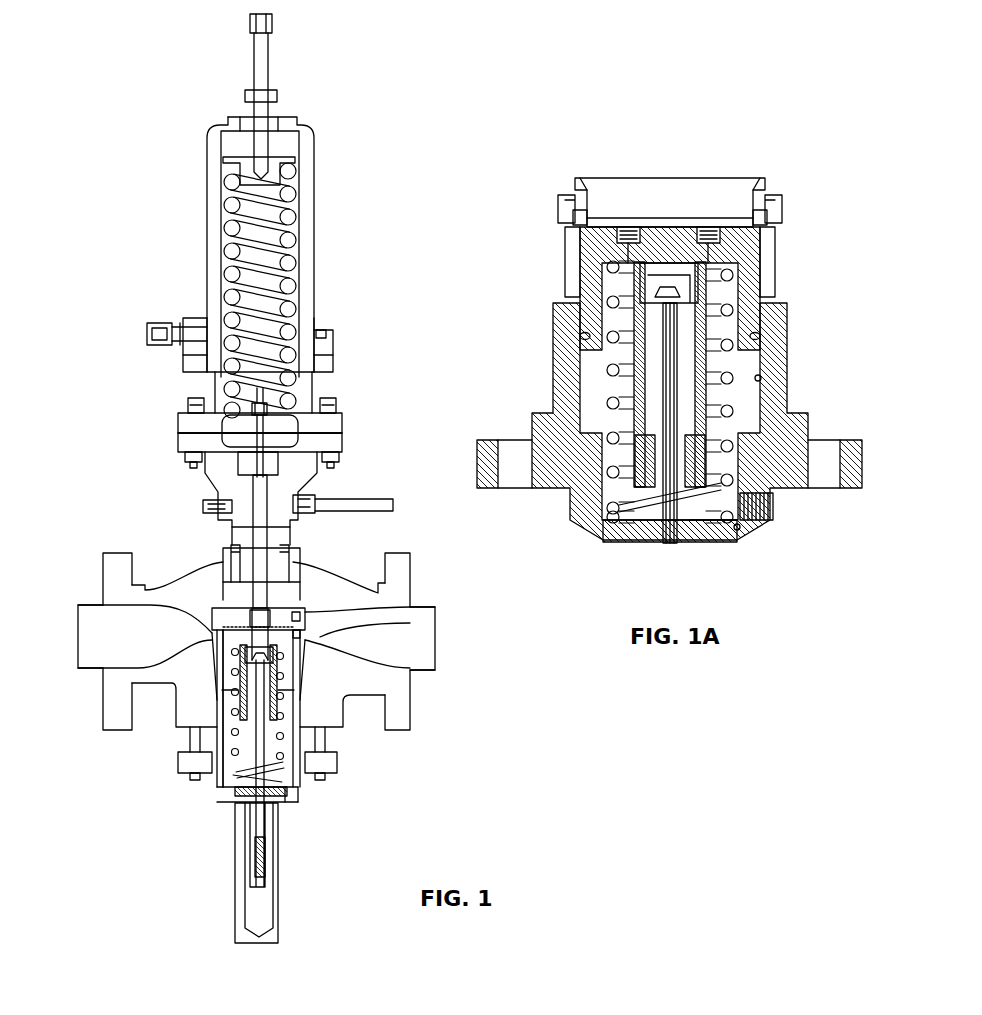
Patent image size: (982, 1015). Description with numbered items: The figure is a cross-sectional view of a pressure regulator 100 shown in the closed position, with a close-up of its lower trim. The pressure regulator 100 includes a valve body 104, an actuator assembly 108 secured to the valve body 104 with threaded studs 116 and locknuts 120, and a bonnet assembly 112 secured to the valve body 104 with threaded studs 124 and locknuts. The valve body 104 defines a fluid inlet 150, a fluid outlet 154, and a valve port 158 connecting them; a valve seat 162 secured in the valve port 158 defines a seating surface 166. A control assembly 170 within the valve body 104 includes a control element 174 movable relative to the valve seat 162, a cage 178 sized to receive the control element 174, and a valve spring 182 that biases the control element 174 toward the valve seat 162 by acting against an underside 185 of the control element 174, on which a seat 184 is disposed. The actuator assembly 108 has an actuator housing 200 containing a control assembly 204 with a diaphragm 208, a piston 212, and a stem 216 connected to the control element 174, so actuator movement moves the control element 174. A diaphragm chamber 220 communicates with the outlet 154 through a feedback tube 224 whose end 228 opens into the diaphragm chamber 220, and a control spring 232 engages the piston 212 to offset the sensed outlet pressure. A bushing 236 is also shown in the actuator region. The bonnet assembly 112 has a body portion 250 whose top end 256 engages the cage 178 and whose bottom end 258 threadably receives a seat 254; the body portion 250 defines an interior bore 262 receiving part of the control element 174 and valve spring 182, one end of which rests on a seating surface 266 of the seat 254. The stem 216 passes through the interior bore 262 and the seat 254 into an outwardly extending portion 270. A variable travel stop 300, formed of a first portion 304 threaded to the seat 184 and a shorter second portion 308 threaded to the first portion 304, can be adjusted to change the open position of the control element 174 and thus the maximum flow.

In FIG. 1, the pressure regulator 100 is at (353, 70).
In FIG. 1, the valve body 104 is at (163, 560).
In FIG. 1, the actuator assembly 108 is at (330, 270).
In FIG. 1, the bonnet assembly 112 is at (212, 812).
In FIG. 1, the threaded studs 116 is at (338, 396).
In FIG. 1, the locknuts 120 is at (260, 450).
In FIG. 1, the threaded studs 124 is at (334, 784).
In FIG. 1, the fluid inlet 150 is at (95, 645).
In FIG. 1, the fluid outlet 154 is at (412, 637).
In FIG. 1, the valve port 158 is at (275, 618).
In FIG. 1A, the valve port 158 is at (720, 200).
In FIG. 1, the valve seat 162 is at (302, 612).
In FIG. 1A, the valve seat 162 is at (758, 203).
In FIG. 1, the seating surface 166 is at (300, 634).
In FIG. 1A, the seating surface 166 is at (770, 225).
In FIG. 1, the control assembly 170 is at (212, 650).
In FIG. 1, the control element 174 is at (295, 662).
In FIG. 1A, the control element 174 is at (750, 283).
In FIG. 1, the cage 178 is at (212, 633).
In FIG. 1A, the cage 178 is at (565, 248).
In FIG. 1, the valve spring 182 is at (293, 800).
In FIG. 1A, the valve spring 182 is at (730, 448).
In FIG. 1, the seat 184 is at (259, 655).
In FIG. 1A, the seat 184 is at (655, 258).
In FIG. 1A, the underside 185 is at (603, 263).
In FIG. 1, the actuator housing 200 is at (303, 233).
In FIG. 1, the control assembly 204 is at (280, 435).
In FIG. 1, the diaphragm 208 is at (215, 445).
In FIG. 1, the piston 212 is at (268, 410).
In FIG. 1, the stem 216 is at (263, 490).
In FIG. 1, the diaphragm chamber 220 is at (272, 463).
In FIG. 1, the feedback tube 224 is at (360, 500).
In FIG. 1, the end 228 is at (320, 513).
In FIG. 1, the control spring 232 is at (272, 203).
In FIG. 1, the stem bushing 236 is at (248, 465).
In FIG. 1, the body portion 250 is at (183, 765).
In FIG. 1A, the body portion 250 is at (580, 478).
In FIG. 1, the seat 254 is at (237, 800).
In FIG. 1A, the seat 254 is at (724, 536).
In FIG. 1, the top end 256 is at (295, 693).
In FIG. 1A, the top end 256 is at (762, 333).
In FIG. 1, the bottom end 258 is at (293, 800).
In FIG. 1A, the bottom end 258 is at (740, 530).
In FIG. 1, the interior bore 262 is at (220, 780).
In FIG. 1A, the interior bore 262 is at (762, 378).
In FIG. 1A, the seating surface 266 is at (628, 528).
In FIG. 1, the outwardly extending portion 270 is at (238, 907).
In FIG. 1A, the variable travel stop 300 is at (615, 452).
In FIG. 1A, the first portion 304 is at (700, 467).
In FIG. 1A, the second portion 308 is at (680, 470).